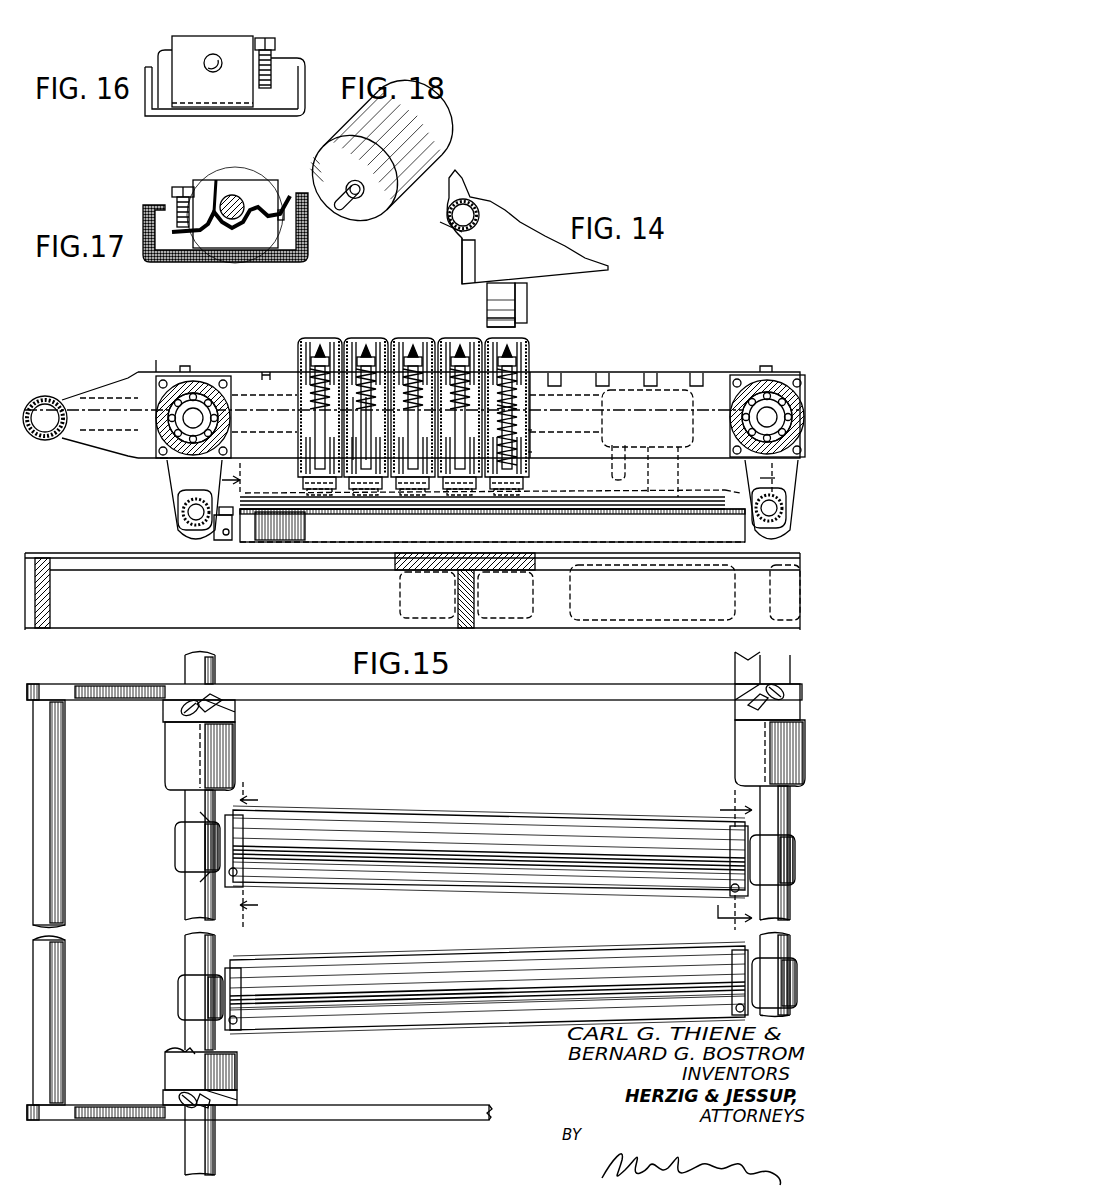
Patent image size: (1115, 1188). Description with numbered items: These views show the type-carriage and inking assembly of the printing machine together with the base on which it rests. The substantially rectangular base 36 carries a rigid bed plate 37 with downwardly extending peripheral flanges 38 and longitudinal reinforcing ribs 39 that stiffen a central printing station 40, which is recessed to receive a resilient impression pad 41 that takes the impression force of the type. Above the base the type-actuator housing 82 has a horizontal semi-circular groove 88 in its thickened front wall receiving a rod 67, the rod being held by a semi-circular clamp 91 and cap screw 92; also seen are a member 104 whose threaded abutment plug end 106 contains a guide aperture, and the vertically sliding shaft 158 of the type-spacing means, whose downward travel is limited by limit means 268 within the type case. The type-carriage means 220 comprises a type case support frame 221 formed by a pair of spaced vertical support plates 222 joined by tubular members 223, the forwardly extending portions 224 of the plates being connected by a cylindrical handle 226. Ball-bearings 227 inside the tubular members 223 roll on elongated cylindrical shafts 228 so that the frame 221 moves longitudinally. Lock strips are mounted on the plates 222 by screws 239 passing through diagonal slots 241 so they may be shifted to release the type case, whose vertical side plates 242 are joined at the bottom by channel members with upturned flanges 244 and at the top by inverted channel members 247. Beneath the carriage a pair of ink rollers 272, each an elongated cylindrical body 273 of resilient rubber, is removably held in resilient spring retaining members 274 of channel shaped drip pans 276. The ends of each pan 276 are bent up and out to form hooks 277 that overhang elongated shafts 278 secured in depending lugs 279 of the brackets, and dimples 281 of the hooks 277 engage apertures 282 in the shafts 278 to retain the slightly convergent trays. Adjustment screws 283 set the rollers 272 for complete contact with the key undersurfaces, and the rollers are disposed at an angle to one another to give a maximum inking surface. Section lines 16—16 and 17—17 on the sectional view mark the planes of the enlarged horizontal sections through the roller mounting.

In FIG. 14, the section line 16— 16 is at (509, 475).
In FIG. 15, the section line 16— 16 is at (725, 858).
In FIG. 15, the section line 17— 17 is at (260, 851).
In FIG. 14, the base 36 is at (148, 630).
In FIG. 14, the bed plate 37 is at (275, 570).
In FIG. 14, the peripheral flanges 38 is at (50, 630).
In FIG. 14, the longitudinal reinforcing ribs 39 is at (465, 598).
In FIG. 14, the printing station 40 is at (505, 572).
In FIG. 14, the impression pad 41 is at (395, 560).
In FIG. 14, the rods 67 is at (478, 208).
In FIG. 14, the housing 82 is at (591, 270).
In FIG. 14, the semi-circular groove 88 is at (477, 219).
In FIG. 14, the semi-circular clamp 91 is at (452, 226).
In FIG. 14, the cap screw 92 is at (462, 262).
In FIG. 14, the bolt 104 is at (487, 300).
In FIG. 14, the threaded abutment plug end 106 is at (487, 322).
In FIG. 14, the shaft 158 is at (527, 292).
In FIG. 14, the type-carriage means 220 is at (332, 329).
In FIG. 14, the type case support frame 221 is at (545, 428).
In FIG. 14, the vertical support plates 222 is at (255, 385).
In FIG. 15, the vertical support plates 222 is at (403, 688).
In FIG. 14, the tubular members 223 is at (205, 392).
In FIG. 15, the tubular members 223 is at (230, 735).
In FIG. 14, the forwardly extending portions 224 is at (98, 447).
In FIG. 15, the forwardly extending portions 224 is at (80, 698).
In FIG. 14, the handle 226 is at (46, 405).
In FIG. 15, the handle 226 is at (60, 805).
In FIG. 14, the ball-bearings 227 is at (182, 380).
In FIG. 14, the cylindrical shafts 228 is at (405, 415).
In FIG. 15, the screws 239 is at (168, 712).
In FIG. 15, the diagonal slots 241 is at (212, 685).
In FIG. 14, the side plates 242 is at (534, 437).
In FIG. 14, the upturned flanges 244 is at (534, 453).
In FIG. 14, the inverted channel members 247 is at (532, 354).
In FIG. 14, the limit means 268 is at (378, 338).
In FIG. 17, the ink rollers 272 is at (230, 160).
In FIG. 18, the ink rollers 272 is at (420, 120).
In FIG. 14, the ink rollers 272 is at (588, 496).
In FIG. 15, the ink rollers 272 is at (540, 840).
In FIG. 15, the cylindrical body 273 is at (497, 840).
In FIG. 17, the spring retaining members 274 is at (250, 190).
In FIG. 15, the spring retaining members 274 is at (240, 838).
In FIG. 16, the drip pans 276 is at (306, 78).
In FIG. 17, the drip pans 276 is at (308, 245).
In FIG. 14, the drip pans 276 is at (652, 598).
In FIG. 15, the drip pans 276 is at (455, 820).
In FIG. 16, the hooks 277 is at (185, 52).
In FIG. 14, the hooks 277 is at (180, 500).
In FIG. 15, the hooks 277 is at (180, 855).
In FIG. 14, the shafts 278 is at (182, 517).
In FIG. 14, the depending lugs 279 is at (168, 482).
In FIG. 14, the dimples 281 is at (482, 499).
In FIG. 15, the dimples 281 is at (175, 840).
In FIG. 16, the apertures 282 is at (214, 55).
In FIG. 14, the apertures 282 is at (198, 515).
In FIG. 15, the apertures 282 is at (208, 845).
In FIG. 16, the adjustment screws 283 is at (276, 46).
In FIG. 17, the adjustment screws 283 is at (178, 186).
In FIG. 15, the adjustment screws 283 is at (238, 870).